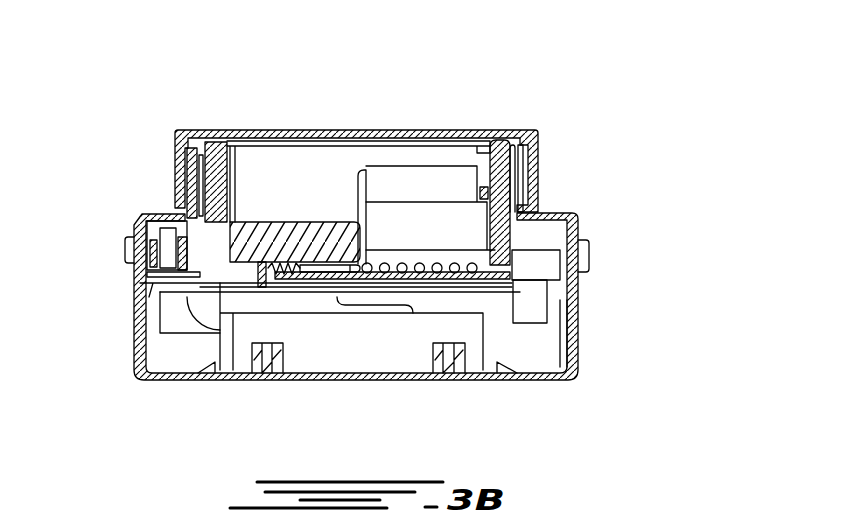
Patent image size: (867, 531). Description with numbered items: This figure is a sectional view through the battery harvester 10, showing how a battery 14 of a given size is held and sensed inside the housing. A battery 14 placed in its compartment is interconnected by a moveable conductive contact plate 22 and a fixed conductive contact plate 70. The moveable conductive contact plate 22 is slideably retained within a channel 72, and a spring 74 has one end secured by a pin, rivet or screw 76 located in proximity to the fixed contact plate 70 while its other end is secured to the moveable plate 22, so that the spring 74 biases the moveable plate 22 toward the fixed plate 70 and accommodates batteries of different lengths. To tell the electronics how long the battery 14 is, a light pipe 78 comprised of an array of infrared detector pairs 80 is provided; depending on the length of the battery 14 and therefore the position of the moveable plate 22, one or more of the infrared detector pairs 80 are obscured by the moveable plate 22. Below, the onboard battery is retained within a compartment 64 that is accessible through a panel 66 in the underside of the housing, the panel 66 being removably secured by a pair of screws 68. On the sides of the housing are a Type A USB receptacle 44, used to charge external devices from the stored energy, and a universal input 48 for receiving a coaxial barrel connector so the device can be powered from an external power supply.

The battery harvester 10 is at (620, 143).
The battery 14 is at (326, 242).
The moveable conductive contact plate 22 is at (404, 146).
The Type A USB receptacle 44 is at (125, 246).
The universal input 48 is at (590, 260).
The compartment 64 is at (468, 336).
The panel 66 is at (415, 379).
The screws 68 is at (267, 378).
The fixed conductive contact plate 70 is at (232, 232).
The channel 72 is at (248, 270).
The spring 74 is at (288, 224).
The pin, rivet or screw 76 is at (278, 265).
The light pipe 78 is at (412, 308).
The infrared detector pairs 80 is at (440, 264).